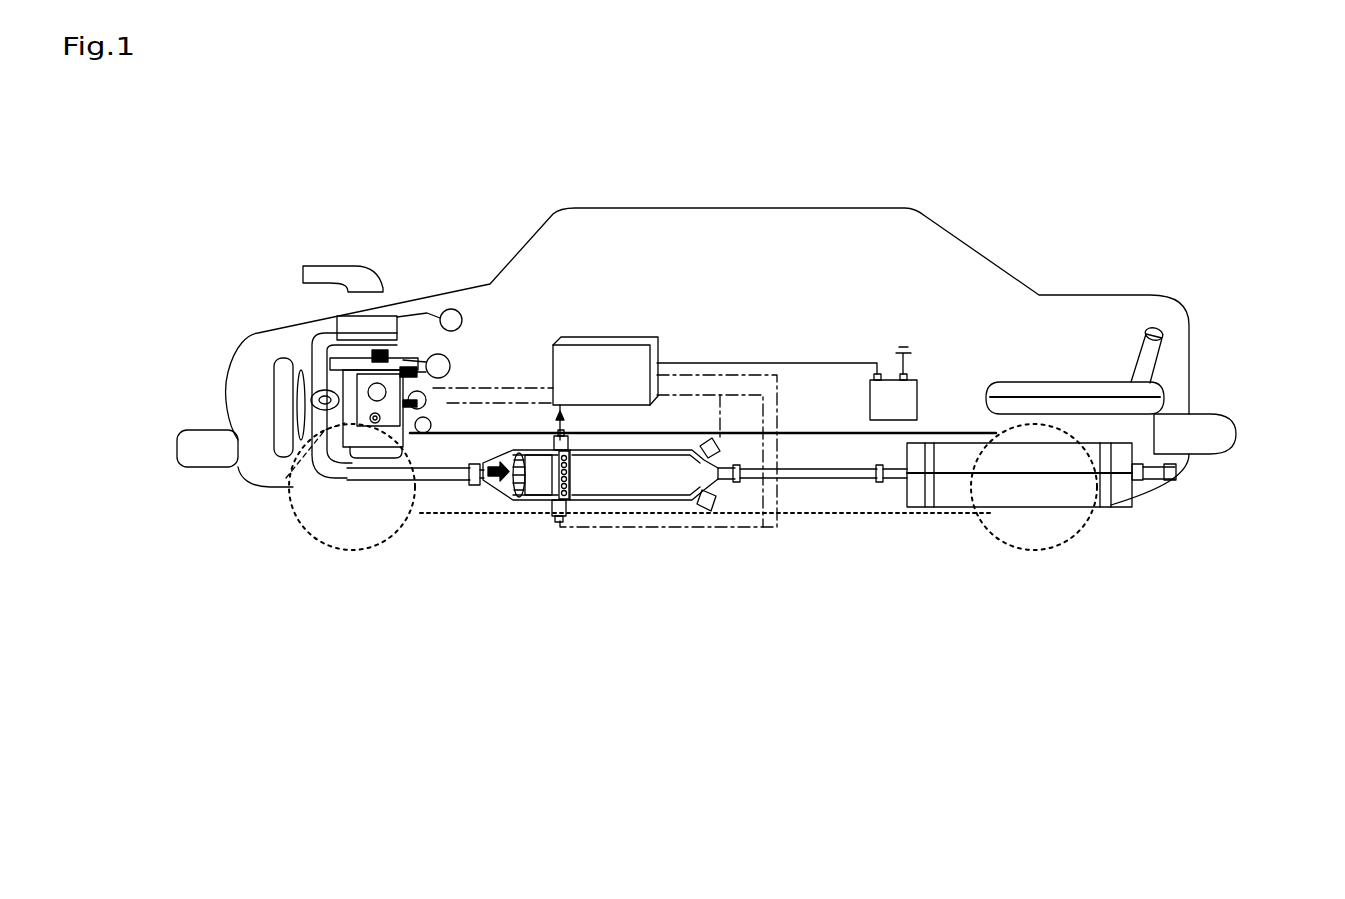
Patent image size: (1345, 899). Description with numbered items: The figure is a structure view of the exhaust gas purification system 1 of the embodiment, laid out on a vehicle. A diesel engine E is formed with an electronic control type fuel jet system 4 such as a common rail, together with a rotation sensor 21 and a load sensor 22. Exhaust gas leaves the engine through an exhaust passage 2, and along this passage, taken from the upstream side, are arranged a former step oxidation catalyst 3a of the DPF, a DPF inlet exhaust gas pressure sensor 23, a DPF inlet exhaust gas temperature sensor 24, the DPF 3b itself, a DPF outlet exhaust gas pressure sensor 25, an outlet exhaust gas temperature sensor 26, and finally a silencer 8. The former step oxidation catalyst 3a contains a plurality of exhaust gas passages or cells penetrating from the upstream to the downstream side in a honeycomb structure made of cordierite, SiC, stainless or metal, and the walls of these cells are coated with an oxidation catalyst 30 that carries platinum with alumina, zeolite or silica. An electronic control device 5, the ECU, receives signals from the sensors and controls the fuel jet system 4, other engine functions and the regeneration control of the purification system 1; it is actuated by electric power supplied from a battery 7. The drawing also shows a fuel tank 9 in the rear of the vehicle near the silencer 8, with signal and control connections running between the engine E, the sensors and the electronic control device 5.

The diesel engine E is at (410, 279).
The exhaust gas purification system 1 is at (950, 183).
The exhaust passage 2 is at (437, 480).
The former step oxidation catalyst 3a is at (560, 617).
The DPF 3b is at (633, 480).
The electronic control type fuel jet system 4 is at (407, 358).
The electronic control device 5 is at (642, 360).
The battery 7 is at (903, 400).
The silencer 8 is at (961, 457).
The fuel tank 9 is at (1054, 386).
The rotation sensor 21 is at (408, 392).
The load sensor 22 is at (447, 353).
The DPF inlet exhaust gas pressure sensor 23 is at (553, 522).
The DPF inlet exhaust gas temperature sensor 24 is at (572, 445).
The DPF outlet exhaust gas pressure sensor 25 is at (713, 510).
The outlet exhaust gas temperature sensor 26 is at (720, 442).
The oxidation catalyst 30 is at (540, 490).